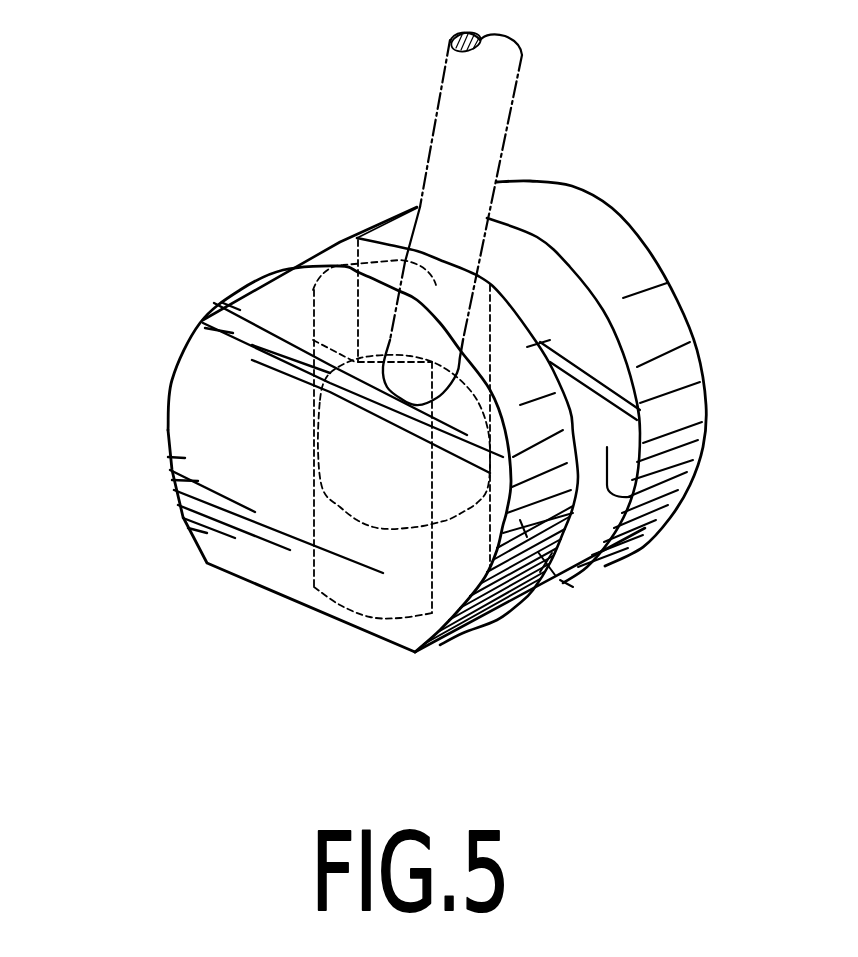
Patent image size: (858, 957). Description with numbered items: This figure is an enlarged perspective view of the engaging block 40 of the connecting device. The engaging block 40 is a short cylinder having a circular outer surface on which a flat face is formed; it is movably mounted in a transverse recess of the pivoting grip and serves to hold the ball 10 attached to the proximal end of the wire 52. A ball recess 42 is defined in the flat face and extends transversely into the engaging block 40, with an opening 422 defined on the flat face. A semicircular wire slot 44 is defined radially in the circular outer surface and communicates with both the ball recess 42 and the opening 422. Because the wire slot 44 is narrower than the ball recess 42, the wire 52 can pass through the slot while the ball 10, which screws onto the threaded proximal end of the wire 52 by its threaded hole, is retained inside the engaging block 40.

The engaging block 40 is at (183, 170).
The ball recess 42 is at (187, 317).
The opening 422 is at (375, 643).
The wire 52 is at (450, 137).
The ball 10 is at (570, 585).
The wire slot 44 is at (640, 510).